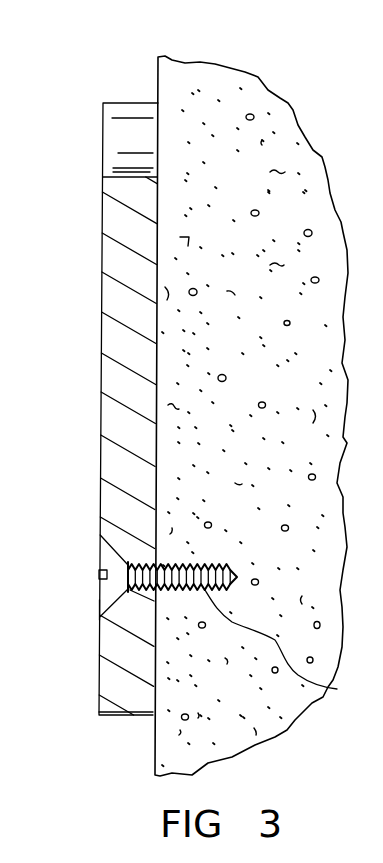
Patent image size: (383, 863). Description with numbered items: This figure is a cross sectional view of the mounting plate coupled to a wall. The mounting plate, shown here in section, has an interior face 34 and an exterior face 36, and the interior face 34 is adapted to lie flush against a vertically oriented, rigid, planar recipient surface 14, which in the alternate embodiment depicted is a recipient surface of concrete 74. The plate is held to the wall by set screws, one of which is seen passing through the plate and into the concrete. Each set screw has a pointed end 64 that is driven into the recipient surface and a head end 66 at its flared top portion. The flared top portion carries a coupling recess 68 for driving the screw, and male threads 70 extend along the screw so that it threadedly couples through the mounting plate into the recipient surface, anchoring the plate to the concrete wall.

The recipient surface 14 is at (151, 721).
The interior face 34 is at (158, 216).
The exterior face 36 is at (100, 340).
The pointed end 64 is at (237, 577).
The head end 66 is at (100, 602).
The coupling recess 68 is at (99, 574).
The male threads 70 is at (291, 653).
The recipient surface of concrete 74 is at (235, 106).